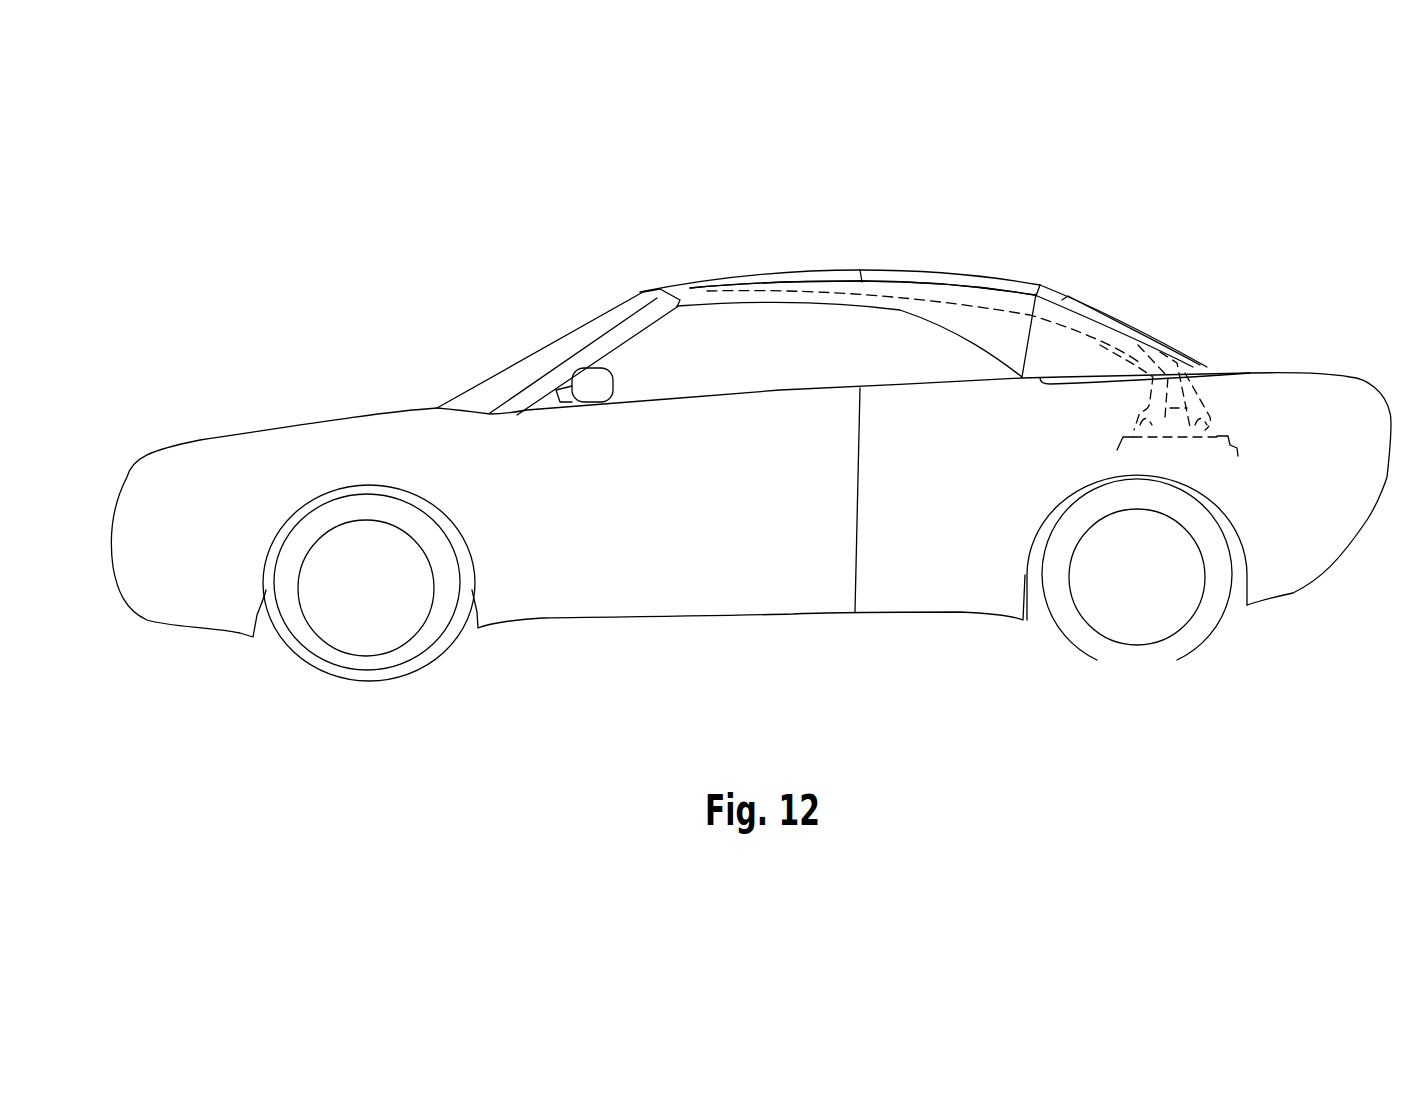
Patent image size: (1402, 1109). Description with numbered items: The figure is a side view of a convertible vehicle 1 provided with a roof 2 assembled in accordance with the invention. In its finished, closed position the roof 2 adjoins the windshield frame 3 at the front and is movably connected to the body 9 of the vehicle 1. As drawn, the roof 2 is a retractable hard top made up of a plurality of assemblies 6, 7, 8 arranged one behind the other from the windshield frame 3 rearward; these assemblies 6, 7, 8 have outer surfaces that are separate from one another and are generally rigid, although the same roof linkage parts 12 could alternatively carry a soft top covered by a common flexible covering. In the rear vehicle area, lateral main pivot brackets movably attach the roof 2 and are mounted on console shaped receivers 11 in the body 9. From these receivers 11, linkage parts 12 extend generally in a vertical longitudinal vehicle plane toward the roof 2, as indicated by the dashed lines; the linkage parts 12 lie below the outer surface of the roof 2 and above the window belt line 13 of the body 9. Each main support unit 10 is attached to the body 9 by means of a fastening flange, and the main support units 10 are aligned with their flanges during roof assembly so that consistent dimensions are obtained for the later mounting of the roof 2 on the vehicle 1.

The vehicle 1 is at (922, 148).
The roof 2 is at (879, 222).
The windshield frame 3 is at (645, 290).
The roof assembly 6 is at (808, 272).
The roof assembly 7 is at (966, 278).
The roof assembly 8 is at (1063, 290).
The body 9 is at (998, 475).
The main support unit 10 is at (1223, 417).
The console shaped receiver 11 is at (1238, 448).
The roof linkage part 12 is at (925, 300).
The window belt line 13 is at (780, 388).